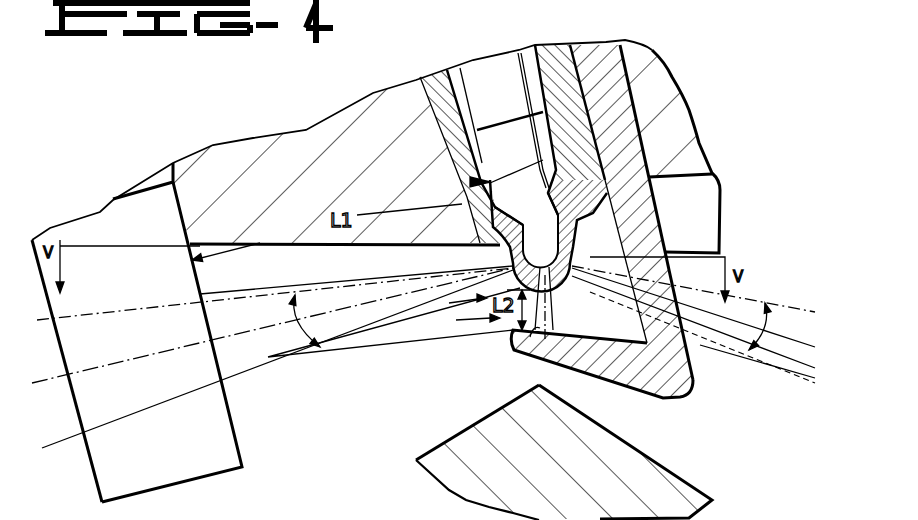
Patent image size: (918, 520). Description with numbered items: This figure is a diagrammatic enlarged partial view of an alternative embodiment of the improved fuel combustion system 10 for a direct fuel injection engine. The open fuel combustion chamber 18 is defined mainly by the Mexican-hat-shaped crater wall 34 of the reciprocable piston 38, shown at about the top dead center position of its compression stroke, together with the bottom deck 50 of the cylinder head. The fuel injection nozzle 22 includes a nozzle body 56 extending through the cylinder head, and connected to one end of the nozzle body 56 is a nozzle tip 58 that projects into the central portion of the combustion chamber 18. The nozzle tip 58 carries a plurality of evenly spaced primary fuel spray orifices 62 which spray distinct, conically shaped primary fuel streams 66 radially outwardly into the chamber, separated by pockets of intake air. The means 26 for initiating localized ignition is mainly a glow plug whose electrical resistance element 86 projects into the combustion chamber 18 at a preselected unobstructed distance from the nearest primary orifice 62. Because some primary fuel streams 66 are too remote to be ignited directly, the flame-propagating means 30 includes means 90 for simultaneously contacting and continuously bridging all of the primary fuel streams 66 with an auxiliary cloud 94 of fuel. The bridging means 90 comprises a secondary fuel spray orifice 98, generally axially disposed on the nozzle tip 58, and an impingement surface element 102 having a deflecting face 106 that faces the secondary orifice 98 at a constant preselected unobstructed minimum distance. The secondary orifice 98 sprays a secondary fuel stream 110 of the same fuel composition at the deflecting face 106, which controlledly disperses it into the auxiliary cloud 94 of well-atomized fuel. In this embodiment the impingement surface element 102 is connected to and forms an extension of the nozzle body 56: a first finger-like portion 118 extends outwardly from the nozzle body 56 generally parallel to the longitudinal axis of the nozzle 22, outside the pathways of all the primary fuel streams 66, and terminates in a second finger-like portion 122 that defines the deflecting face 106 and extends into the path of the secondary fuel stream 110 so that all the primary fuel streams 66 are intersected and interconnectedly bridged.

The fuel combustion system 10 is at (729, 90).
The fuel combustion chamber 18 is at (410, 416).
The fuel injection nozzle 22 is at (521, 32).
The means for initiating localized ignition and flaming of fuel 26 is at (253, 417).
The means for propagating the flame 30 is at (415, 266).
The crater wall 34 is at (440, 445).
The piston 38 is at (672, 460).
The bottom deck 50 is at (257, 143).
The nozzle body 56 is at (602, 47).
The nozzle tip 58 is at (650, 220).
The primary fuel spray orifices 62 is at (507, 253).
The primary fuel streams 66 is at (529, 322).
The electrical resistance element 86 is at (107, 460).
The means for interconnectedly bridging the primary fuel streams 90 is at (461, 313).
The auxiliary cloud of fuel 94 is at (392, 350).
The secondary fuel spray orifice 98 is at (560, 283).
The impingement surface element 102 is at (719, 387).
The deflecting face 106 is at (536, 333).
The secondary fuel stream 110 is at (547, 317).
The first finger-like portion 118 is at (652, 220).
The second finger-like portion 122 is at (623, 367).